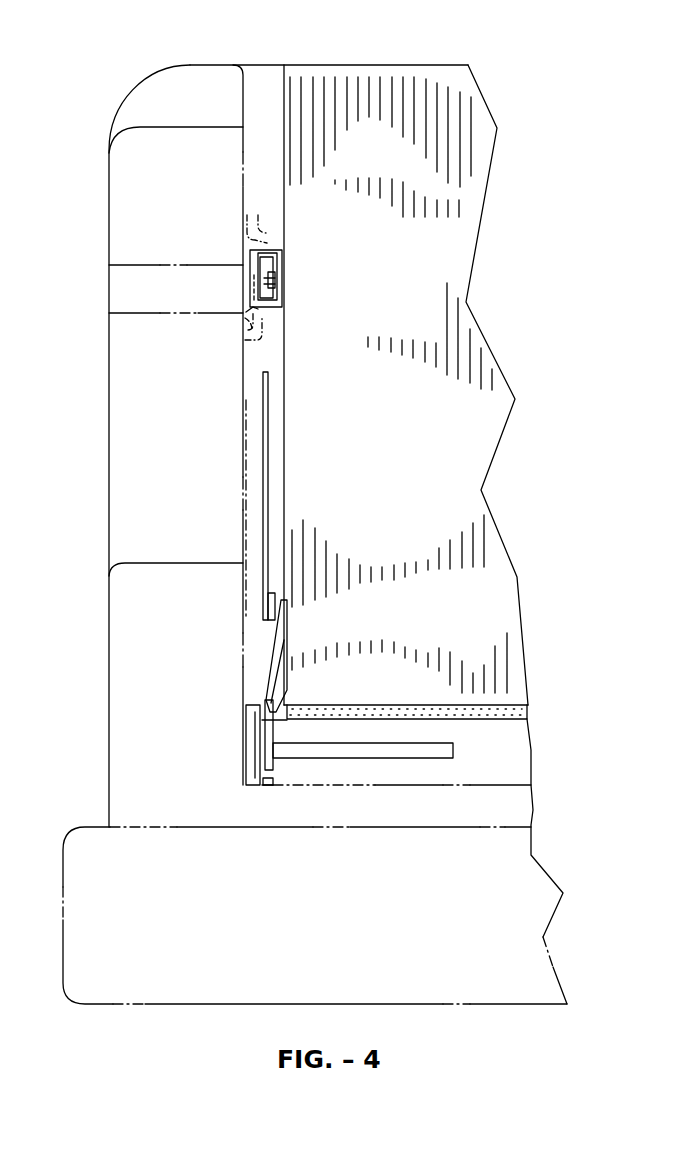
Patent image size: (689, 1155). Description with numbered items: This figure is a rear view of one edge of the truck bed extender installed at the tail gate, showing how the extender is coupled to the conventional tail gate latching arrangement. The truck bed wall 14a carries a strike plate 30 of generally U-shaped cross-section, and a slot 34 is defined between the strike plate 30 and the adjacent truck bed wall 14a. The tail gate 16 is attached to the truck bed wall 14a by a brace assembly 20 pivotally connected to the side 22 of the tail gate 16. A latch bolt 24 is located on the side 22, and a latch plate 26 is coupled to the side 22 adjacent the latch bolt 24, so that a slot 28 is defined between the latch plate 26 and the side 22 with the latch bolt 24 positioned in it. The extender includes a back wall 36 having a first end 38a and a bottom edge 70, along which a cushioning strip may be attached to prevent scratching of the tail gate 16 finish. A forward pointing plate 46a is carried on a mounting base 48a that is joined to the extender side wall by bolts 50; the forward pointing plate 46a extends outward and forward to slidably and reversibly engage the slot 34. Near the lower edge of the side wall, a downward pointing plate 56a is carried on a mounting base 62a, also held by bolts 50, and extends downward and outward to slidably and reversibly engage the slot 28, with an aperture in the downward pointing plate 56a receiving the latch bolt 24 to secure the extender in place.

The truck bed wall 14a is at (190, 68).
The back wall 36 is at (403, 73).
The slot 34 is at (240, 244).
The mounting base 48a is at (283, 253).
The bolt 50 is at (274, 282).
The forward pointing plate 46a is at (253, 307).
The strike plate 30 is at (257, 350).
The first end of back wall 38a is at (312, 433).
The brace assembly 20 is at (268, 513).
The mounting base 62a is at (288, 643).
The slot 28 is at (258, 684).
The latch plate 26 is at (263, 700).
The downward pointing plate 56a is at (273, 740).
The side of tail gate 22 is at (237, 790).
The latch bolt 24 is at (343, 757).
The tail gate 16 is at (402, 778).
The bottom edge of back wall 70 is at (500, 720).